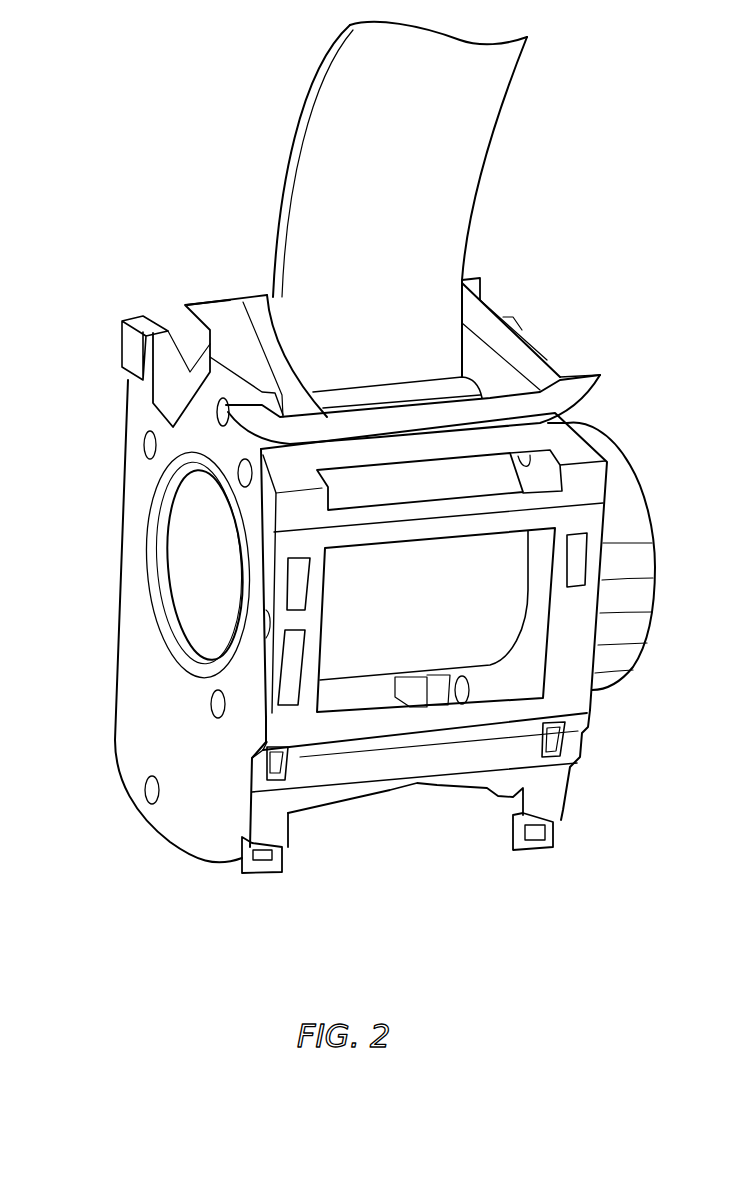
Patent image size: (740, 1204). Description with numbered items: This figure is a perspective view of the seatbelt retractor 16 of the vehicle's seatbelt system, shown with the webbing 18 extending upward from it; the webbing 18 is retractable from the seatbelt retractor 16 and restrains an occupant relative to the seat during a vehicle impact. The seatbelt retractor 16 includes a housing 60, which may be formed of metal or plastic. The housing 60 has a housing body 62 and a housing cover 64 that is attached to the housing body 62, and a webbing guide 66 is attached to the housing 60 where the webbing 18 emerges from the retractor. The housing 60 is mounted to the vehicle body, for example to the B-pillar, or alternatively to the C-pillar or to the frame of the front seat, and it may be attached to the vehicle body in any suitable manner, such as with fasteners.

The seatbelt retractor 16 is at (126, 158).
The webbing 18 is at (480, 163).
The housing 60 is at (102, 846).
The housing body 62 is at (180, 855).
The housing cover 64 is at (300, 815).
The webbing guide 66 is at (583, 372).